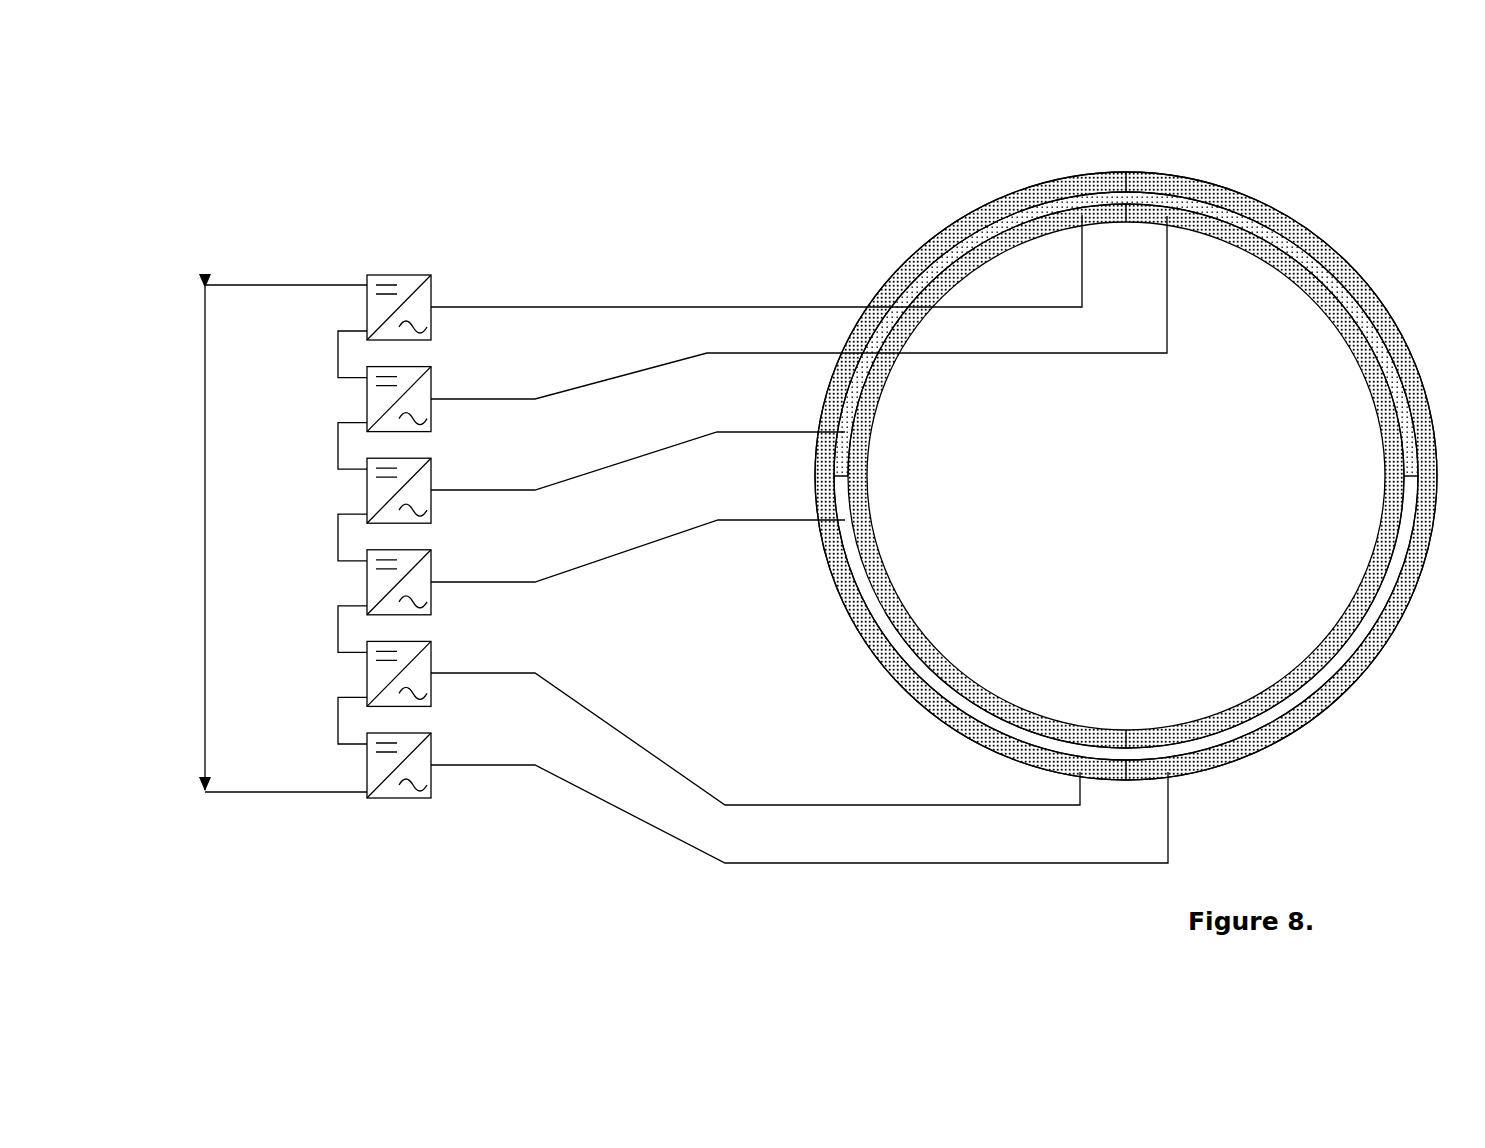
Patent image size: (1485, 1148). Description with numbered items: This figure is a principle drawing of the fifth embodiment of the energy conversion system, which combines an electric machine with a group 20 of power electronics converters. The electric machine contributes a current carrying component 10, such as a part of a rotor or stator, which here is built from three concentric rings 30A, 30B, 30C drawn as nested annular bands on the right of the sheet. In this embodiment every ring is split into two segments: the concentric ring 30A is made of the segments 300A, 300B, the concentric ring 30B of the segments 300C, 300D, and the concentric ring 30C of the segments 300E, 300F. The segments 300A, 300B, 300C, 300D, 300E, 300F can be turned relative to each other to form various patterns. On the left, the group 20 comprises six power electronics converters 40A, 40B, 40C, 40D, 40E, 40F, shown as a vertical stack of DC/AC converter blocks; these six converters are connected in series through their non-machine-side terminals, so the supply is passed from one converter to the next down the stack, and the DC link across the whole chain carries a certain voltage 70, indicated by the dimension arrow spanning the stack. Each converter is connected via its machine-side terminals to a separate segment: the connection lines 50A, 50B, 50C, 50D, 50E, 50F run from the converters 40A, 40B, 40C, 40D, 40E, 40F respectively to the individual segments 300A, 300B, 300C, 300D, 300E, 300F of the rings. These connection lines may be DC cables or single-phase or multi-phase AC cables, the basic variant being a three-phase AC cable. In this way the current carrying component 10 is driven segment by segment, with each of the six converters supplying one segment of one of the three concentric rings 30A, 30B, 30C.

The current carrying component 10 is at (872, 232).
The group of power electronics converters 20 is at (366, 228).
The outer concentric ring 30A is at (1094, 169).
The inner concentric ring 30B is at (1358, 288).
The concentric ring 30C is at (948, 652).
The segment 300A is at (1018, 195).
The segment 300B is at (1263, 210).
The segment 300C is at (1368, 326).
The segment 300D is at (1382, 572).
The segment 300E is at (1073, 728).
The segment 300F is at (1195, 725).
The power electronics converter 40A is at (432, 282).
The power electronics converter 40B is at (431, 385).
The power electronics converter 40C is at (431, 472).
The power electronics converter 40D is at (431, 562).
The power electronics converter 40E is at (431, 655).
The power electronics converter 40F is at (431, 748).
The connection line 50A is at (662, 305).
The connection line 50B is at (557, 390).
The connection line 50C is at (558, 482).
The connection line 50D is at (565, 568).
The connection line 50E is at (582, 692).
The connection line 50F is at (618, 818).
The DC link voltage 70 is at (205, 527).